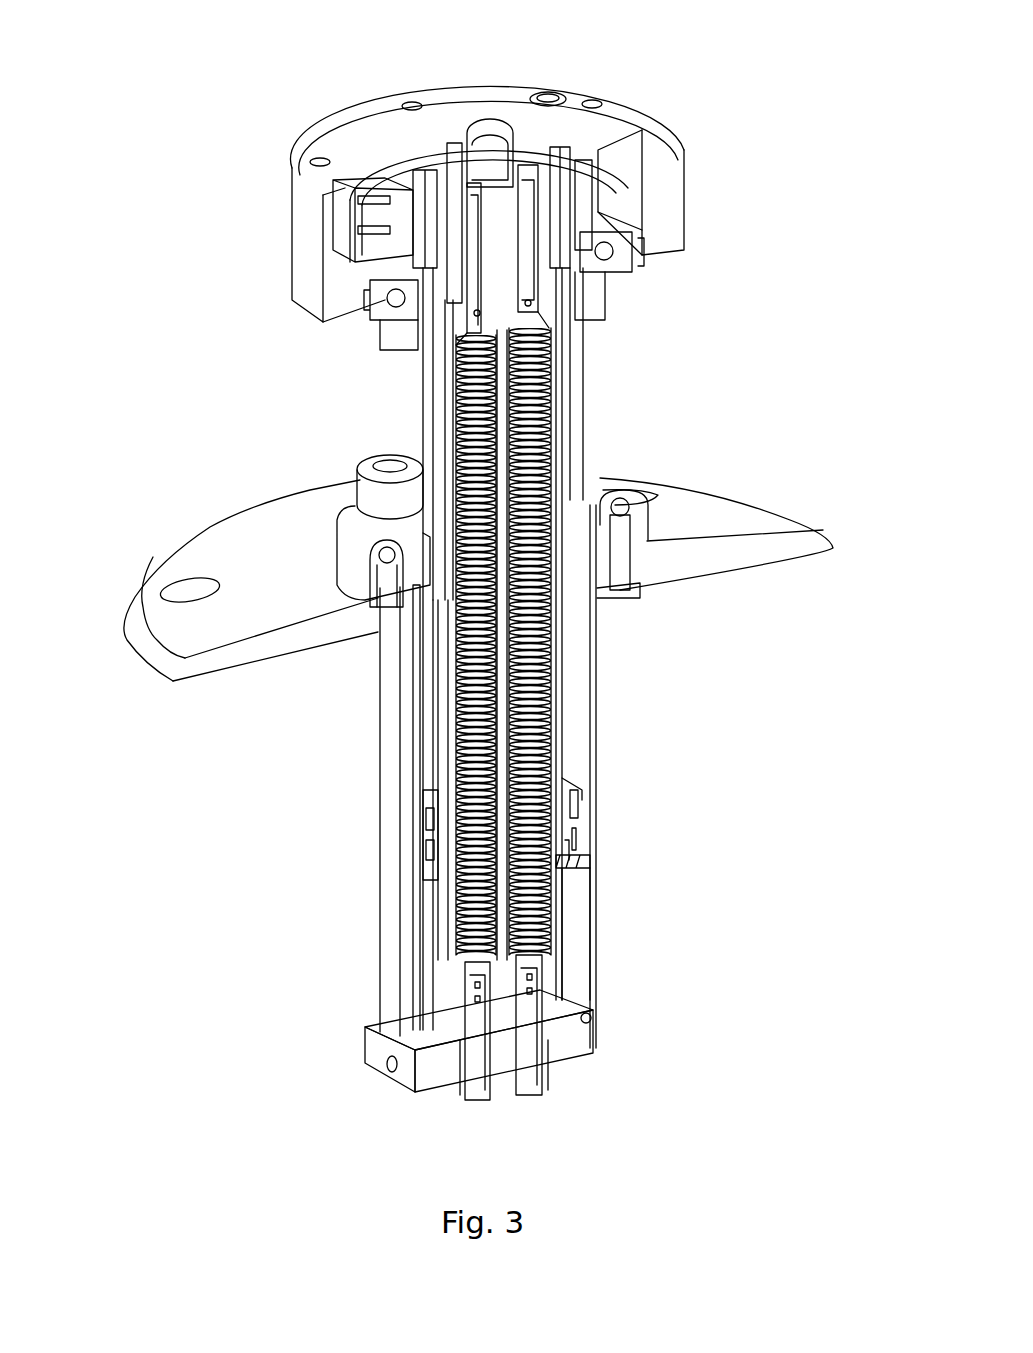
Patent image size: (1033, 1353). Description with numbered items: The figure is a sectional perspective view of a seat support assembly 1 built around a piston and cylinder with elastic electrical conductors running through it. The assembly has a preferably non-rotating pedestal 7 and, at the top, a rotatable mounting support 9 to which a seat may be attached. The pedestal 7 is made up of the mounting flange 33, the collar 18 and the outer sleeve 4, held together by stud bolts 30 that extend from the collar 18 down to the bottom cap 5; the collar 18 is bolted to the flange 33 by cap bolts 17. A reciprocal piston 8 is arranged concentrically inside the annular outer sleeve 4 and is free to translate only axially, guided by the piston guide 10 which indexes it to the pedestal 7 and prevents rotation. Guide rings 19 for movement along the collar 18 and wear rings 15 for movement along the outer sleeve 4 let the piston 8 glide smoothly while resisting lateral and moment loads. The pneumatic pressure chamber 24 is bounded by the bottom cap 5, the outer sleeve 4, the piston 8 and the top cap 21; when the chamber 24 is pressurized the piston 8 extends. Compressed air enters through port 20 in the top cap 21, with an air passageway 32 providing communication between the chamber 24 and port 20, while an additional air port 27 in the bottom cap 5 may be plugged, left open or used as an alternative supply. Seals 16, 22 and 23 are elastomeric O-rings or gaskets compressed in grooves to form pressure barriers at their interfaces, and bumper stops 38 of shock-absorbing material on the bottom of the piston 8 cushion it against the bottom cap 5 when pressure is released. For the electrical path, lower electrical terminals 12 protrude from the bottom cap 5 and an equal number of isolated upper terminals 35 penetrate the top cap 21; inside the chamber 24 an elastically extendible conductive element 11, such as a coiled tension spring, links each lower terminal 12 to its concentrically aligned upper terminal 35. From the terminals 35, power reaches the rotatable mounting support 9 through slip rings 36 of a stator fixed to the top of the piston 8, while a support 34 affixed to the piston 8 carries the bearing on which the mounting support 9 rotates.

The seat support assembly 1 is at (137, 64).
The outer sleeve 4 is at (600, 893).
The bottom cap 5 is at (578, 1062).
The pedestal 7 is at (193, 865).
The piston 8 is at (580, 414).
The rotatable mounting support 9 is at (684, 172).
The piston guide 10 is at (450, 937).
The elastically extendible conductive element 11 is at (565, 732).
The lower electrical terminals 12 is at (540, 1090).
The wear rings 15 is at (597, 838).
The seal 16 is at (585, 810).
The cap bolts 17 is at (385, 615).
The collar 18 is at (585, 470).
The guide rings 19 is at (618, 583).
The port 20 is at (500, 268).
The top cap 21 is at (505, 190).
The seal 22 is at (592, 1020).
The seal 23 is at (447, 253).
The pneumatic pressure chamber 24 is at (575, 950).
The air port 27 is at (388, 1068).
The stud bolts 30 is at (380, 930).
The air passageway 32 is at (505, 678).
The mounting flange 33 is at (187, 627).
The support 34 is at (600, 305).
The upper terminals 35 is at (462, 178).
The slip rings 36 is at (602, 168).
The bumper stops 38 is at (580, 863).